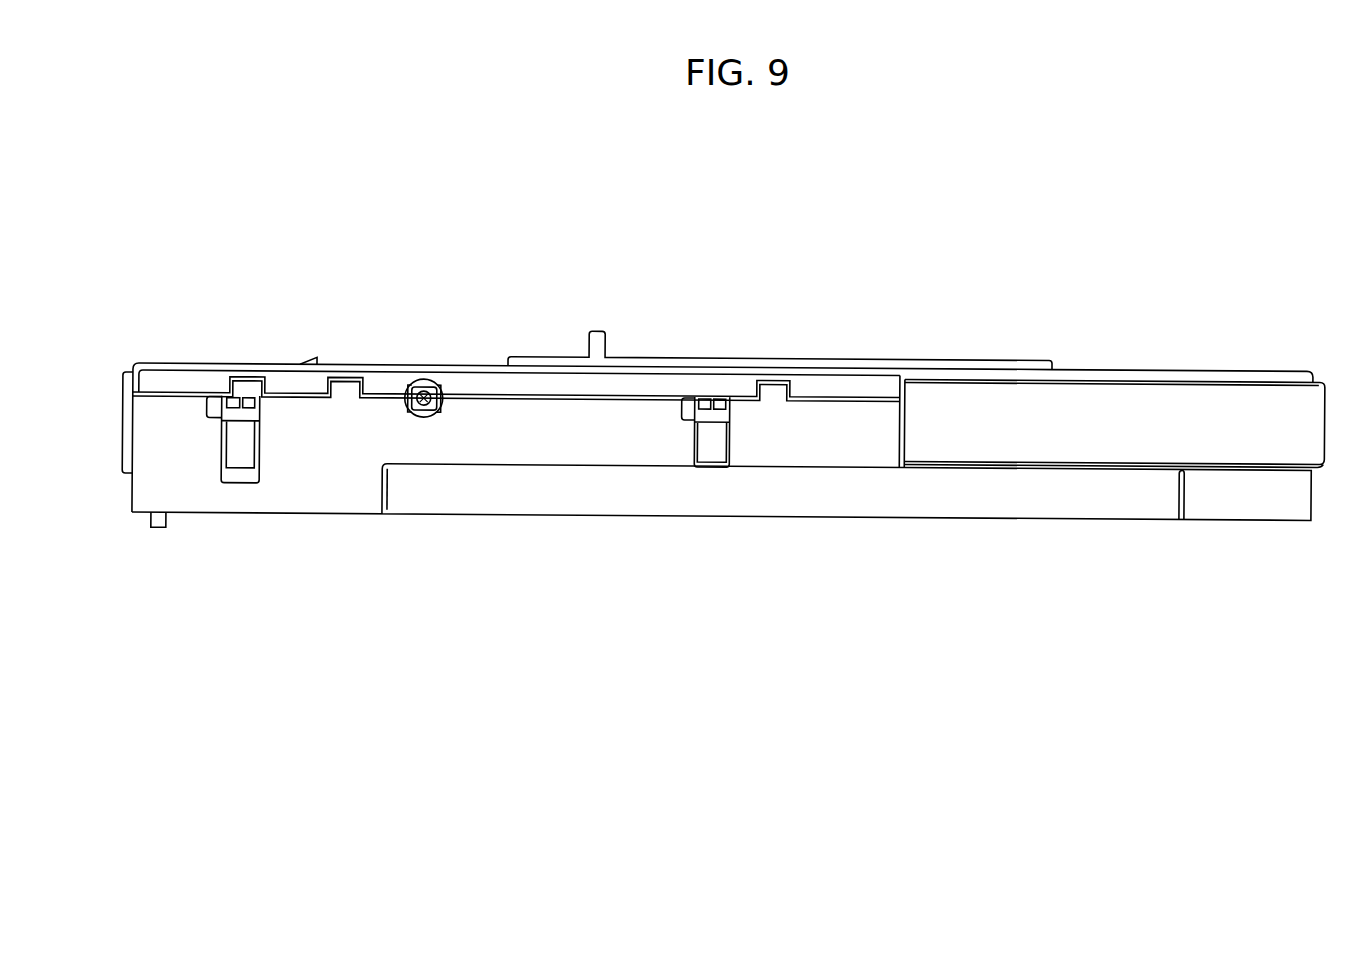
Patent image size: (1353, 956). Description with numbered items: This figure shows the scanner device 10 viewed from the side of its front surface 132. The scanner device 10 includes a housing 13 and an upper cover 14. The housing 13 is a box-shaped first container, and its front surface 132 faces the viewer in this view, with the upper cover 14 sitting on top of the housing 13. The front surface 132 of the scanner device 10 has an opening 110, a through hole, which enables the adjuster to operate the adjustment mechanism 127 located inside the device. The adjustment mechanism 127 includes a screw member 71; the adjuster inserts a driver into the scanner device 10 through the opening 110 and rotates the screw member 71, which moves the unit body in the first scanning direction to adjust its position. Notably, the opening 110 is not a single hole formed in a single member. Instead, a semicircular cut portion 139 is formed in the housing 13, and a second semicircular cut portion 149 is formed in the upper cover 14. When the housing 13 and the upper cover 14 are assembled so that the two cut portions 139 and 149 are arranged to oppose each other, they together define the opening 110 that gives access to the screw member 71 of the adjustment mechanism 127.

The scanner device 10 is at (1197, 278).
The housing 13 is at (765, 530).
The upper cover 14 is at (825, 347).
The screw member 71 is at (424, 410).
The opening 110 is at (455, 420).
The adjustment mechanism 127 is at (396, 393).
The front surface 132 is at (1103, 405).
The semicircular cut portion 139 is at (402, 426).
The semicircular cut portion 149 is at (445, 380).